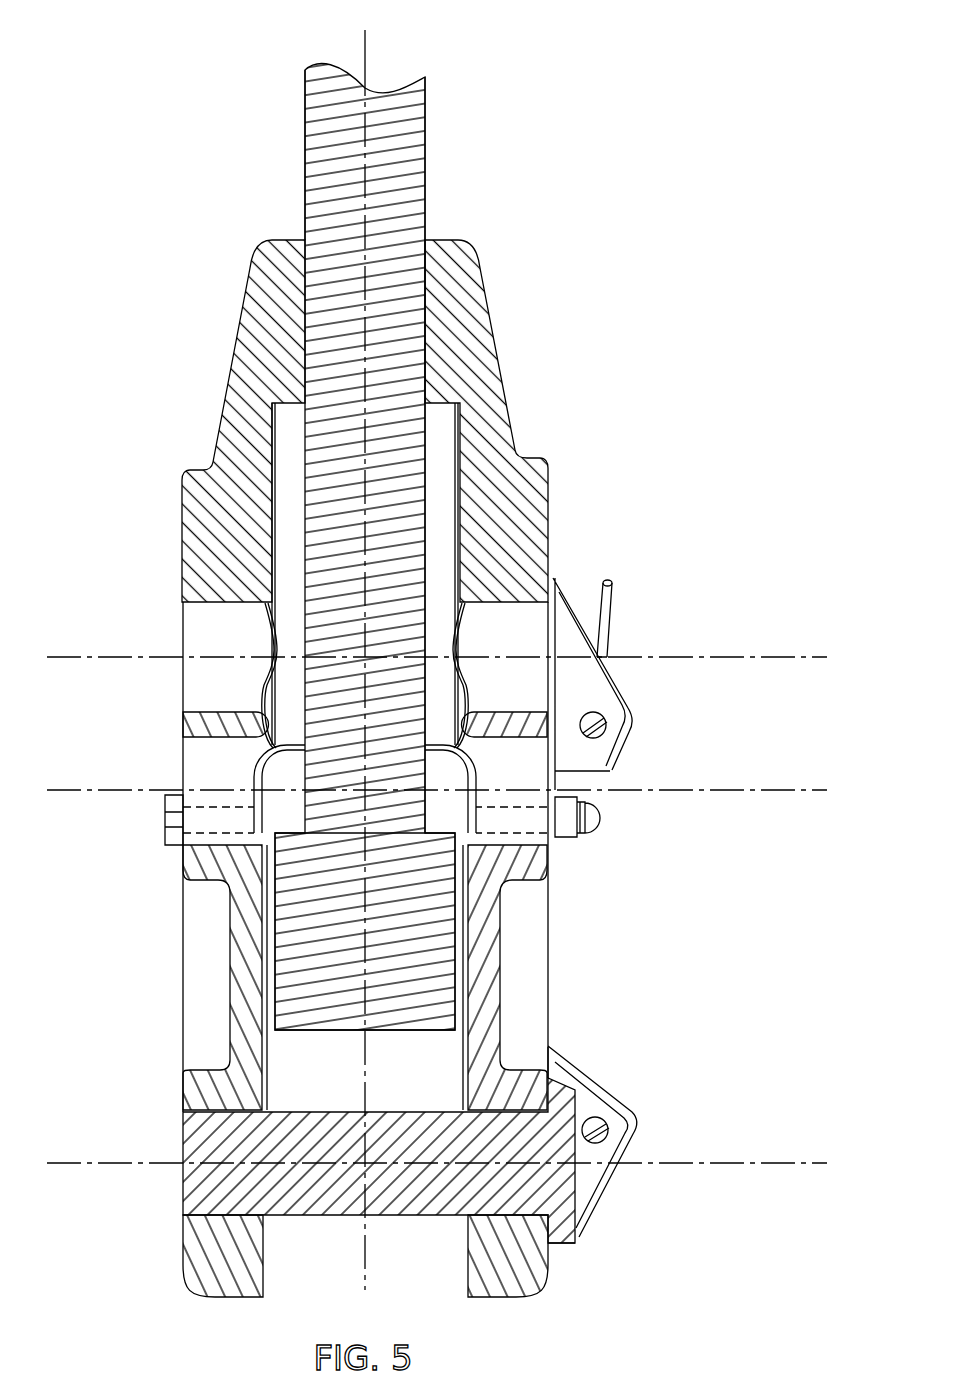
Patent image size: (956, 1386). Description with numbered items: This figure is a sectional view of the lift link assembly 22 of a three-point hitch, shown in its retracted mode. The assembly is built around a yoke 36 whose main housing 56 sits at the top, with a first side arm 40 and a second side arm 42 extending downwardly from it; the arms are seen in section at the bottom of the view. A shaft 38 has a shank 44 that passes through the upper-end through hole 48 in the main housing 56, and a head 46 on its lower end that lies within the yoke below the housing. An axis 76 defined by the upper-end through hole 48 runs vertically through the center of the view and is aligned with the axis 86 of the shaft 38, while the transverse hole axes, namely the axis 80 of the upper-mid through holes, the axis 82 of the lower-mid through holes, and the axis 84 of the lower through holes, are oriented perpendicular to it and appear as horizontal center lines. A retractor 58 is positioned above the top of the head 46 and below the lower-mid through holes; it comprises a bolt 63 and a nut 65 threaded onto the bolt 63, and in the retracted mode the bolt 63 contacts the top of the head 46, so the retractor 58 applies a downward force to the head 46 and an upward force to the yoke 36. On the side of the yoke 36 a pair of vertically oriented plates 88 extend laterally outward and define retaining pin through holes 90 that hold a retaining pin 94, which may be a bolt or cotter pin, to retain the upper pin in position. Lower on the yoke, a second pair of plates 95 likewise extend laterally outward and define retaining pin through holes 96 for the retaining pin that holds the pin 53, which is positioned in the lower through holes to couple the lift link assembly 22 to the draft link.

The lift link assembly 22 is at (786, 548).
The yoke 36 is at (625, 535).
The shaft 38 is at (462, 165).
The first side arm 40 is at (212, 1297).
The second side arm 42 is at (510, 1297).
The shank 44 is at (305, 203).
The head 46 is at (407, 1030).
The upper-end through hole 48 is at (425, 240).
The pin 53 is at (575, 1248).
The main housing 56 is at (505, 378).
The retractor 58 is at (165, 785).
The bolt 63 is at (165, 815).
The nut 65 is at (600, 808).
The axis 76 is at (289, 645).
The axis 80 is at (810, 655).
The axis 82 is at (810, 788).
The axis 84 is at (810, 1160).
The axis 86 is at (362, 58).
The plate 88 is at (612, 665).
The retaining pin through hole 90 is at (605, 735).
The retaining pin 94 is at (612, 600).
The plate 95 is at (592, 1068).
The retaining pin through hole 96 is at (600, 1115).